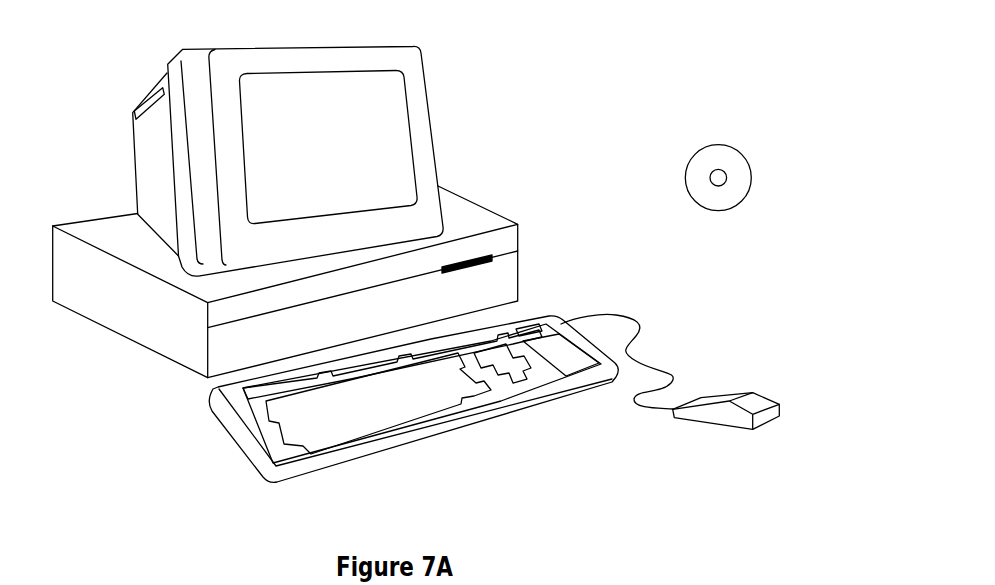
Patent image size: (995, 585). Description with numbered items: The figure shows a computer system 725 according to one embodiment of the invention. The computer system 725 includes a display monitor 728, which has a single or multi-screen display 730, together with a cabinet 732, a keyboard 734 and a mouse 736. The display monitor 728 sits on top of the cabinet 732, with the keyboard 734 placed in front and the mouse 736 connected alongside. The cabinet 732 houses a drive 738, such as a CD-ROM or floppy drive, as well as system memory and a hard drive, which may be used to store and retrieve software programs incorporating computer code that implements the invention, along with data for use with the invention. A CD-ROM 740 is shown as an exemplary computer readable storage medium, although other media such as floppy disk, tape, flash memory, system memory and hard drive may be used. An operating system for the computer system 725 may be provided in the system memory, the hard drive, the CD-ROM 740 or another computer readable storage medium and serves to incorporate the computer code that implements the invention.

The computer system 725 is at (639, 18).
The display monitor 728 is at (433, 157).
The display 730 is at (392, 108).
The cabinet 732 is at (170, 365).
The keyboard 734 is at (417, 442).
The mouse 736 is at (767, 397).
The drive 738 is at (494, 258).
The CD-ROM 740 is at (733, 145).